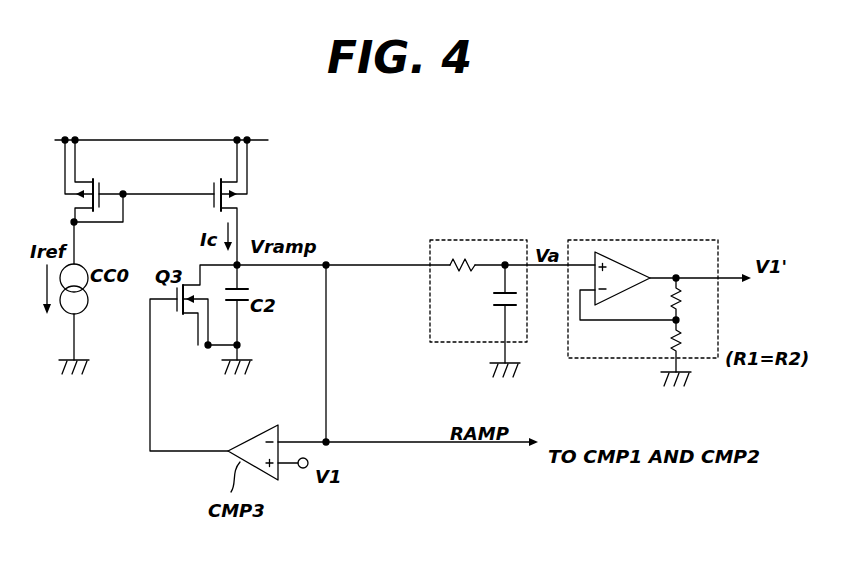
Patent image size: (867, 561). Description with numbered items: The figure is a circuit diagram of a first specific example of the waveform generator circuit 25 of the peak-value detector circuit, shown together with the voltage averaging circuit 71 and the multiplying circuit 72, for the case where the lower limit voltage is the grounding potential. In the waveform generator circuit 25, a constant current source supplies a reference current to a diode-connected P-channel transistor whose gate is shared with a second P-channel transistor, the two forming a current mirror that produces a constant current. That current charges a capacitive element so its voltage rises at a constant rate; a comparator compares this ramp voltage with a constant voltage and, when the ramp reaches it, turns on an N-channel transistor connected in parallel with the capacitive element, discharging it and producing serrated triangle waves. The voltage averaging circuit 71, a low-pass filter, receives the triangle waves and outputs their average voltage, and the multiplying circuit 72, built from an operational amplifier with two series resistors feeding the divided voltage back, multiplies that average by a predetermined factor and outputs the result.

The waveform generator circuit 25 is at (258, 128).
The voltage averaging circuit 71 is at (482, 240).
The multiplying circuit 72 is at (648, 240).